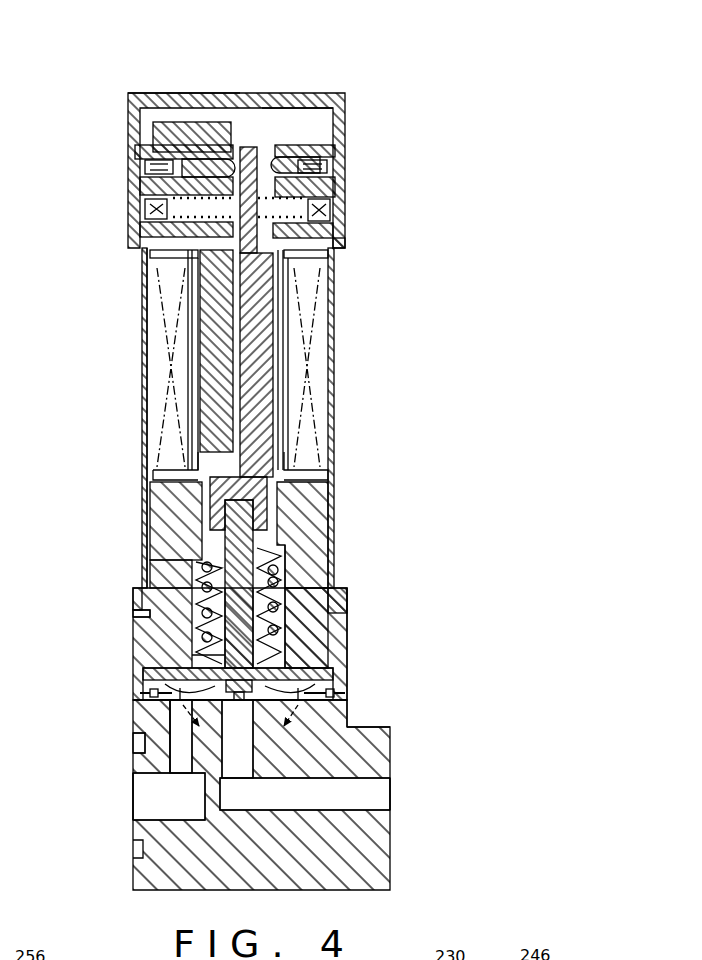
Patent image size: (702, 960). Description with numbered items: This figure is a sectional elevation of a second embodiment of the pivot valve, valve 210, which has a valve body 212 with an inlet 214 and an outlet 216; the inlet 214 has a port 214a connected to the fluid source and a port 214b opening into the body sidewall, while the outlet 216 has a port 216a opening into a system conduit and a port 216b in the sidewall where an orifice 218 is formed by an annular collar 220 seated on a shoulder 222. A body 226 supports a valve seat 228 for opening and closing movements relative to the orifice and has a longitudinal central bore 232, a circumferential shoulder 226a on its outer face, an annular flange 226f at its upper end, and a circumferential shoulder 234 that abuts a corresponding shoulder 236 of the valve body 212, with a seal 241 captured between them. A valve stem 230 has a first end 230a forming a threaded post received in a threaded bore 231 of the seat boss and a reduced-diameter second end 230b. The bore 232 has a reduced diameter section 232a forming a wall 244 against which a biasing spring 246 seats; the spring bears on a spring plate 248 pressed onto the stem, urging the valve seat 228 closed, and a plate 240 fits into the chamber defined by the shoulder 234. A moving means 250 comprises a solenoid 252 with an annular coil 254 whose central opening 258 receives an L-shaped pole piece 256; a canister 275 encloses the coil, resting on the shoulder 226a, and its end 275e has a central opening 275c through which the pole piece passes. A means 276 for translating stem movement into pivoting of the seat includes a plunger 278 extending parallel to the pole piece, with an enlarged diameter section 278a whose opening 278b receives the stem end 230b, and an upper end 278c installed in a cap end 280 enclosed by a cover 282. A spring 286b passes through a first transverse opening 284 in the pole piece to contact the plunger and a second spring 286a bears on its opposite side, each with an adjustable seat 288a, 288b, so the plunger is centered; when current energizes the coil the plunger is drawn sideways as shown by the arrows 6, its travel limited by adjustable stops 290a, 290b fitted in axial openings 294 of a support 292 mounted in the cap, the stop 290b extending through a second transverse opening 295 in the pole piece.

The flow direction arrows 6 is at (240, 724).
The valve 210 is at (428, 548).
The valve body 212 is at (268, 892).
The inlet 214 is at (188, 808).
The port 214a is at (133, 808).
The port 214b is at (168, 724).
The outlet 216 is at (366, 800).
The port 216a is at (392, 790).
The port 216b is at (350, 762).
The orifice 218 is at (238, 722).
The annular collar 220 is at (345, 712).
The shoulder 222 is at (200, 773).
The body 226 is at (350, 648).
The circumferential shoulder 226a is at (140, 620).
The annular flange 226f is at (320, 463).
The valve seat 228 is at (135, 760).
The valve stem 230 is at (318, 563).
The first end 230a is at (345, 623).
The second end 230b is at (326, 491).
The threaded bore 231 is at (185, 660).
The central bore 232 is at (333, 590).
The reduced diameter section 232a is at (318, 525).
The circumferential shoulder 234 is at (345, 685).
The shoulder 236 is at (345, 703).
The plate 240 is at (138, 668).
The seal 241 is at (135, 713).
The wall 244 is at (165, 570).
The biasing spring 246 is at (135, 598).
The spring plate 248 is at (192, 648).
The moving means 250 is at (360, 357).
The solenoid 252 is at (140, 345).
The coil 254 is at (154, 312).
The pole piece 256 is at (230, 290).
The central opening 258 is at (195, 455).
The canister 275 is at (345, 388).
The central opening 275c is at (345, 246).
The end 275e is at (332, 302).
The means for translating movement 276 is at (345, 115).
The plunger 278 is at (310, 122).
The enlarged diameter section 278a is at (172, 503).
The opening 278b is at (165, 525).
The upper end 278c is at (262, 185).
The cap end 280 is at (182, 94).
The cover 282 is at (128, 120).
The first transverse opening 284 is at (195, 258).
The second spring 286a is at (312, 222).
The spring 286b is at (150, 213).
The seat 288a is at (322, 207).
The seat 288b is at (148, 203).
The stop 290a is at (303, 150).
The stop 290b is at (252, 144).
The support 292 is at (160, 134).
The axial openings 294 is at (150, 158).
The second transverse opening 295 is at (232, 155).